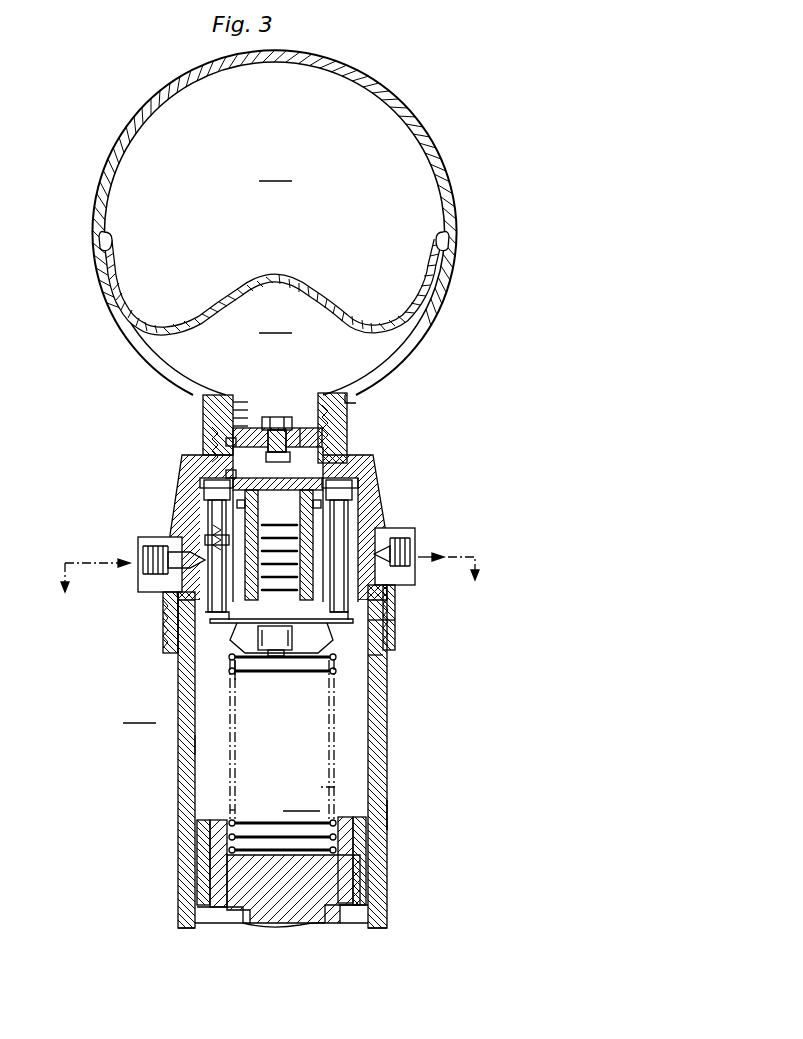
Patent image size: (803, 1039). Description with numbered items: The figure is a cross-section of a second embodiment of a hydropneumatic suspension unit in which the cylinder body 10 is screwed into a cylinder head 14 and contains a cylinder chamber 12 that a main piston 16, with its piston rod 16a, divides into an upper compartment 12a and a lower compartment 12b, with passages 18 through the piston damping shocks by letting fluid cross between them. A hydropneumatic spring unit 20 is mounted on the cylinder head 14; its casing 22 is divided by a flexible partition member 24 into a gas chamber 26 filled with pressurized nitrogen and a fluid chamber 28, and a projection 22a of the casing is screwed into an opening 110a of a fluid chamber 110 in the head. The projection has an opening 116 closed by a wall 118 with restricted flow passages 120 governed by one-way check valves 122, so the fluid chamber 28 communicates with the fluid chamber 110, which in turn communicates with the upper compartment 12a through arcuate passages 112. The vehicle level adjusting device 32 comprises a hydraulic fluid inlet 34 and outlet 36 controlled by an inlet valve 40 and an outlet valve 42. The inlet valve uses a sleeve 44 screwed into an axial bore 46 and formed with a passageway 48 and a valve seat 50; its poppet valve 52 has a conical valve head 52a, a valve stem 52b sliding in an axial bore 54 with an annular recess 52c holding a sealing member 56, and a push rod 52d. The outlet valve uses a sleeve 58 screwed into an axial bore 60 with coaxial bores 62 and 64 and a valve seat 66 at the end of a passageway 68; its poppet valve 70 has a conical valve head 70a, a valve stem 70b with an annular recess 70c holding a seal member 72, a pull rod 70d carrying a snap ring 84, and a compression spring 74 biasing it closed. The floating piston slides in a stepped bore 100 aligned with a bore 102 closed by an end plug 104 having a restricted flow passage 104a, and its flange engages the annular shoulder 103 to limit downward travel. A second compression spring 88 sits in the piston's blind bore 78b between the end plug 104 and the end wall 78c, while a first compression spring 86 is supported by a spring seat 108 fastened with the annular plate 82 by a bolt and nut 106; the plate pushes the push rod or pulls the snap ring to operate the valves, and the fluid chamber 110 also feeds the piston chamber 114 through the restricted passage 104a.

The cylinder body 10 is at (375, 812).
The cylinder chamber 12 is at (368, 746).
The upper compartment 12a is at (304, 798).
The lower compartment 12b is at (208, 918).
The cylinder head 14 is at (370, 462).
The main piston 16 is at (325, 862).
The piston rod 16a is at (366, 913).
The axially extending passage 18 is at (358, 874).
The hydropneumatic spring unit 20 is at (428, 128).
The casing 22 is at (445, 180).
The projection 22a is at (357, 373).
The flexible partition member 24 is at (326, 298).
The gas chamber 26 is at (275, 168).
The fluid chamber 28 is at (275, 320).
The vehicle level adjusting device 32 is at (139, 710).
The hydraulic fluid inlet 34 is at (80, 570).
The hydraulic fluid outlet 36 is at (418, 562).
The hydraulic fluid inlet valve 40 is at (165, 605).
The hydraulic fluid outlet valve 42 is at (392, 642).
The sleeve 44 is at (178, 622).
The axial bore 46 is at (140, 580).
The hydraulic fluid passageway 48 is at (165, 645).
The valve seat 50 is at (141, 550).
The poppet valve 52 is at (207, 515).
The conical valve head 52a is at (203, 536).
The valve stem 52b is at (212, 500).
The annular recess 52c is at (216, 480).
The push rod 52d is at (180, 674).
The axial bore 54 is at (225, 458).
The sealing member 56 is at (232, 445).
The sleeve 58 is at (395, 652).
The axial bore 60 is at (396, 530).
The axial bore 62 is at (395, 620).
The axial bore 64 is at (288, 650).
The valve seat 66 is at (356, 454).
The hydraulic fluid passageway 68 is at (365, 470).
The poppet valve 70 is at (278, 524).
The conical valve head 70a is at (368, 488).
The valve stem 70b is at (392, 585).
The annular recess 70c is at (392, 597).
The pull rod 70d is at (262, 654).
The seal member 72 is at (392, 607).
The compression spring 74 is at (392, 632).
The blind bore 78b is at (258, 794).
The end wall 78c is at (215, 740).
The annular plate 82 is at (185, 694).
The snap ring 84 is at (316, 740).
The first compression spring 86 is at (336, 787).
The second compression spring 88 is at (225, 650).
The stepped bore 100 is at (178, 745).
The stepped bore 102 is at (240, 424).
The annular shoulder 103 is at (290, 654).
The end plug 104 is at (350, 430).
The restricted flow passage 104a is at (240, 405).
The bolt and nut 106 is at (258, 652).
The spring seat 108 is at (216, 711).
The fluid chamber 110 is at (245, 432).
The opening 110a is at (240, 416).
The arcuate elongate passage 112 is at (348, 410).
The piston chamber 114 is at (300, 557).
The opening 116 is at (203, 398).
The wall 118 is at (352, 395).
The restricted flow passage 120 is at (264, 416).
The one-way check valve 122 is at (318, 393).